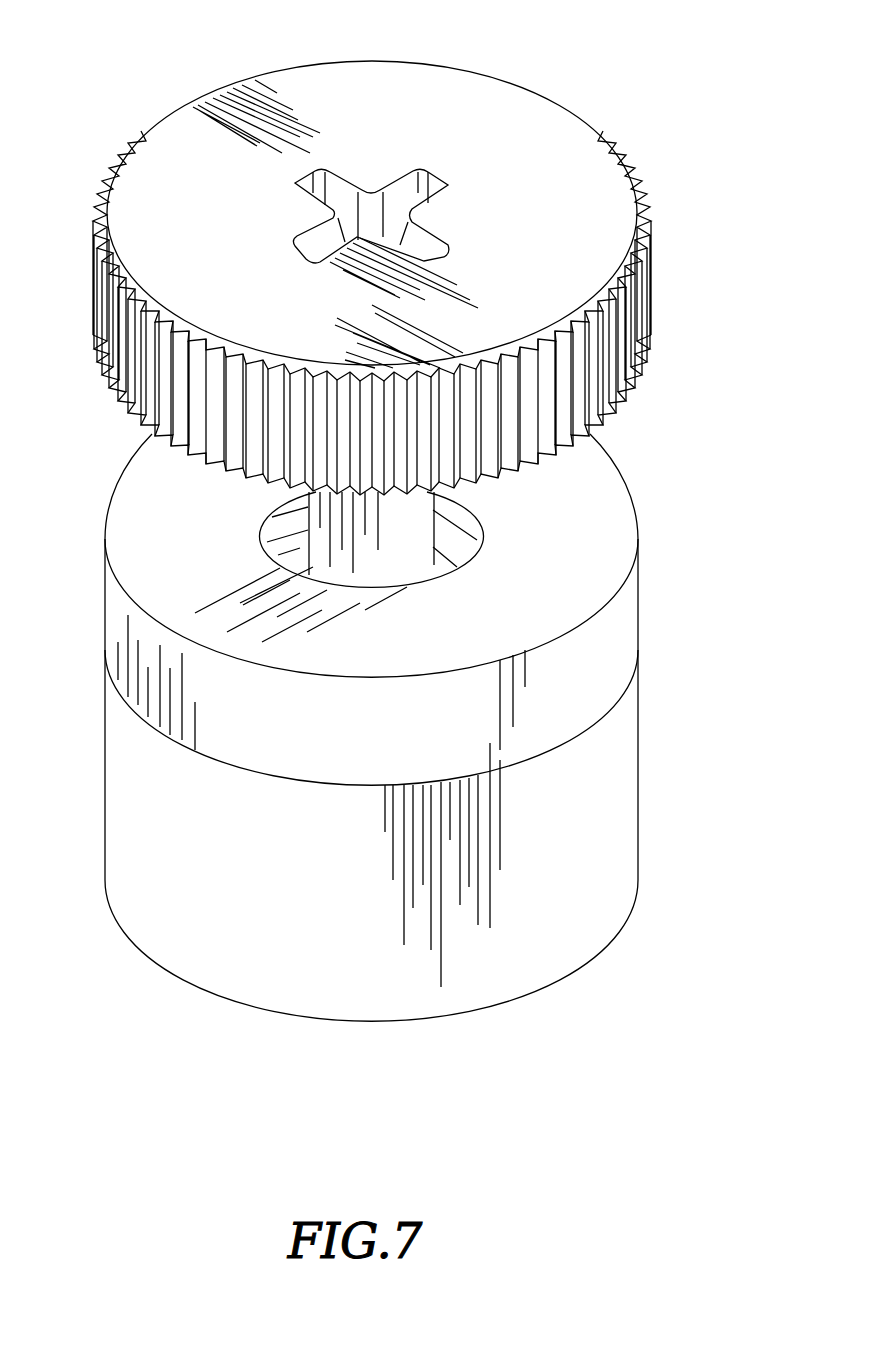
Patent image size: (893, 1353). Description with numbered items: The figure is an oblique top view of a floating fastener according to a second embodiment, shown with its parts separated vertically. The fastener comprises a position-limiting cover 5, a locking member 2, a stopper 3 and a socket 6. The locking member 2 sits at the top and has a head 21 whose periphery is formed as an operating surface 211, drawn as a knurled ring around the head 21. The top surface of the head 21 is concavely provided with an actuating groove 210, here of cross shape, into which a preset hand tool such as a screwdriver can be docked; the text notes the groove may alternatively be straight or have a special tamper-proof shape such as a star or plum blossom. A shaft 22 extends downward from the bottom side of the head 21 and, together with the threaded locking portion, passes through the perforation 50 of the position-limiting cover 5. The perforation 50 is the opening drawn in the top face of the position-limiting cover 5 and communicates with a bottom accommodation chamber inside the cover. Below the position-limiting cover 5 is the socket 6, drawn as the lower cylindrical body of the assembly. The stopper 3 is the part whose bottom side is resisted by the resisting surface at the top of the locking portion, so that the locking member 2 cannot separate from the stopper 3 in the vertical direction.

The locking member 2 is at (401, 251).
The head 21 is at (140, 197).
The actuating groove 210 is at (395, 217).
The operating surface 211 is at (607, 352).
The shaft 22 is at (405, 525).
The stopper 3 is at (393, 727).
The perforation 50 is at (281, 514).
The position-limiting cover 5 is at (657, 570).
The socket 6 is at (660, 771).